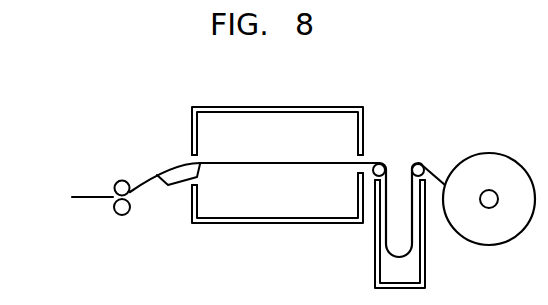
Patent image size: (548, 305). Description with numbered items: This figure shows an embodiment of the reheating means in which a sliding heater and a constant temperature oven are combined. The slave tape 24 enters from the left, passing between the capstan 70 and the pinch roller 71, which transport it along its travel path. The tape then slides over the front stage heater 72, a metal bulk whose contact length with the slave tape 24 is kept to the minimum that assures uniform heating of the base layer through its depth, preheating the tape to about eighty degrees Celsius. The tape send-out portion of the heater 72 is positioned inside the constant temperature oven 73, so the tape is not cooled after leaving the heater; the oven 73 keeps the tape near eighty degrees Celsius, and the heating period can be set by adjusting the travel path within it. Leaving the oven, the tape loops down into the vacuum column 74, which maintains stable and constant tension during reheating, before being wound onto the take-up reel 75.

The slave tape 24 is at (73, 202).
The capstan 70 is at (115, 218).
The pinch roller 71 is at (120, 180).
The front stage heater 72 is at (175, 184).
The constant temperature oven 73 is at (280, 113).
The vacuum column 74 is at (378, 272).
The take-up reel 75 is at (497, 246).